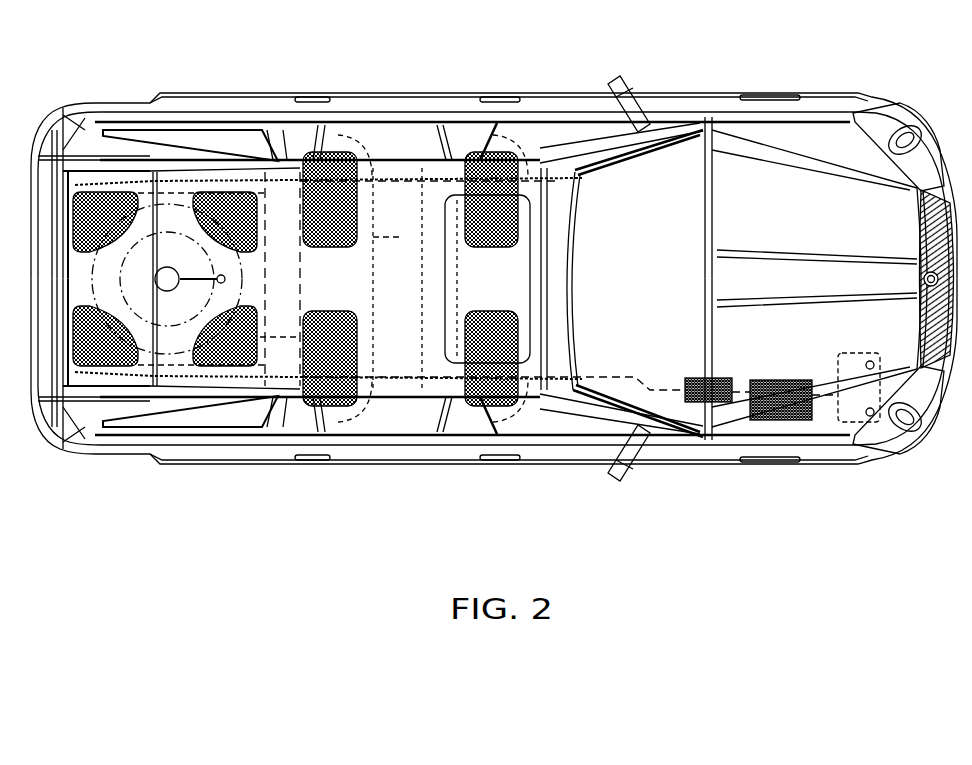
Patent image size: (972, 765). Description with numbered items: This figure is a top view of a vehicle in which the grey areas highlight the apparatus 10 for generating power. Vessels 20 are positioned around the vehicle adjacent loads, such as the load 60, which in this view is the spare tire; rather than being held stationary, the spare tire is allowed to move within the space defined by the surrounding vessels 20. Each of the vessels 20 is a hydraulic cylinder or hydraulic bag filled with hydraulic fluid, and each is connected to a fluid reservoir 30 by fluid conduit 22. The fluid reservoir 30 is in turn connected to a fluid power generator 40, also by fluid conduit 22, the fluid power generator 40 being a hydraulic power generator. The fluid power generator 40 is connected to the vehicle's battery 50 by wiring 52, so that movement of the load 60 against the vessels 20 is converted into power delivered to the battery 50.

The apparatus 10 is at (243, 552).
The vessels 20 is at (107, 193).
The fluid conduit 22 is at (398, 237).
The fluid reservoir 30 is at (700, 403).
The fluid power generator 40 is at (793, 425).
The battery 50 is at (893, 400).
The wiring 52 is at (838, 424).
The load 60 is at (173, 338).